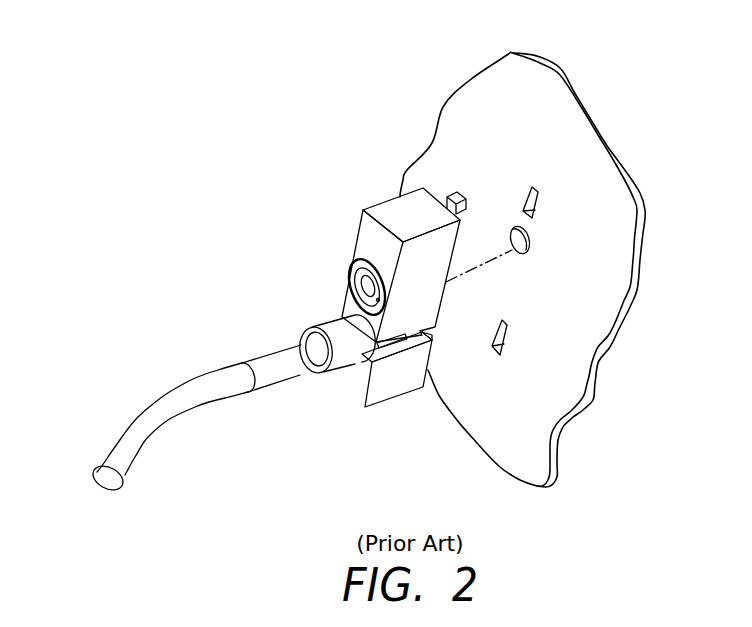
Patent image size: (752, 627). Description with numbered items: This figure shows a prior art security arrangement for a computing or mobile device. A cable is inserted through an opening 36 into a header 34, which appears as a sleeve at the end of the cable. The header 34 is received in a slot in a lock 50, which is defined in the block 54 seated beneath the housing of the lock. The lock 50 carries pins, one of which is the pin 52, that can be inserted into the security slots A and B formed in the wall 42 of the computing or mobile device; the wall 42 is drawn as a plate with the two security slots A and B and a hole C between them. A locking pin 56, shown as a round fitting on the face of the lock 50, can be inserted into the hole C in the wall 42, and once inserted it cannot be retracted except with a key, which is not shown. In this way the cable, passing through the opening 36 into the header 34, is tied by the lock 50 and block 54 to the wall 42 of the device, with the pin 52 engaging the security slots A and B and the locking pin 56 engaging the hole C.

The wall 42 is at (533, 107).
The lock 50 is at (378, 272).
The pin 52 is at (404, 219).
The block 54 is at (395, 381).
The locking pin 56 is at (384, 299).
The header 34 is at (347, 352).
The opening 36 is at (318, 376).
The security slot A is at (535, 207).
The security slot B is at (505, 340).
The hole C is at (527, 237).